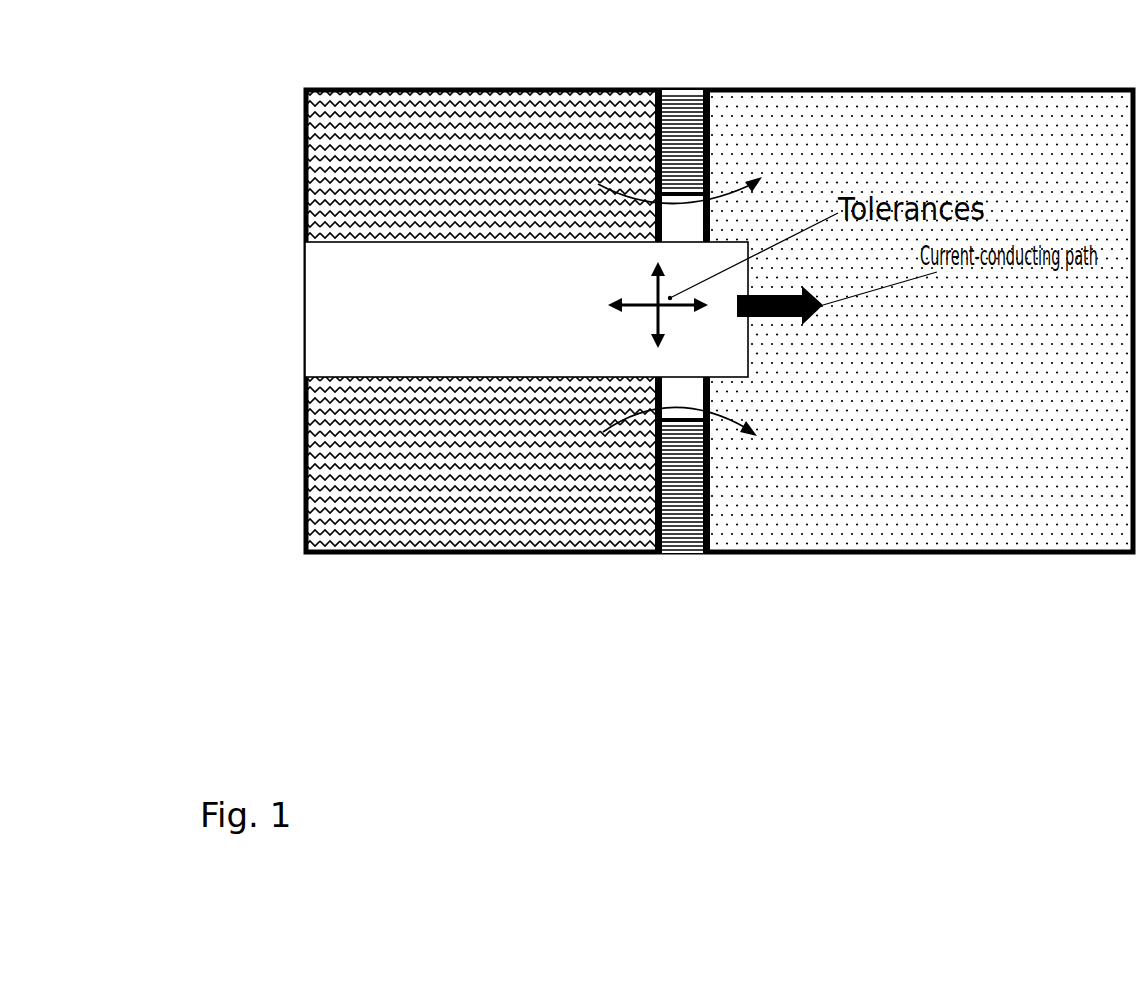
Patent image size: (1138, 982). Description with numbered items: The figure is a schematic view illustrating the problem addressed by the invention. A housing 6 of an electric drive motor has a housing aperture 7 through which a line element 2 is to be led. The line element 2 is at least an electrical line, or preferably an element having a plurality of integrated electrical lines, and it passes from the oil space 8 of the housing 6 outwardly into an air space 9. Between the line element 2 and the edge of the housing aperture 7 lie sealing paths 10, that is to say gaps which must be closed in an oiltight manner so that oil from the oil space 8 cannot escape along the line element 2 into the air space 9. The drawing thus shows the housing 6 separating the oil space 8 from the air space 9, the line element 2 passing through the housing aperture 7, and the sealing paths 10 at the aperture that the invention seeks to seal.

The line element 2 is at (526, 309).
The housing 6 is at (681, 111).
The housing aperture 7 is at (665, 235).
The oil space 8 is at (481, 320).
The air space 9 is at (921, 320).
The sealing paths 10 is at (684, 307).